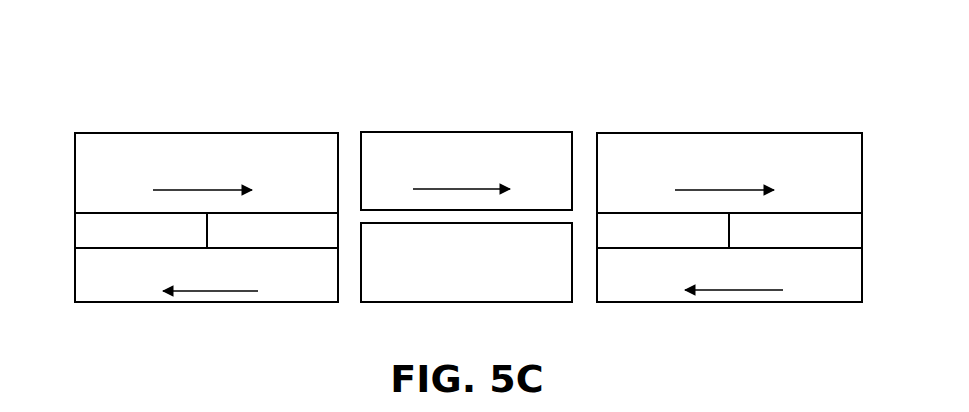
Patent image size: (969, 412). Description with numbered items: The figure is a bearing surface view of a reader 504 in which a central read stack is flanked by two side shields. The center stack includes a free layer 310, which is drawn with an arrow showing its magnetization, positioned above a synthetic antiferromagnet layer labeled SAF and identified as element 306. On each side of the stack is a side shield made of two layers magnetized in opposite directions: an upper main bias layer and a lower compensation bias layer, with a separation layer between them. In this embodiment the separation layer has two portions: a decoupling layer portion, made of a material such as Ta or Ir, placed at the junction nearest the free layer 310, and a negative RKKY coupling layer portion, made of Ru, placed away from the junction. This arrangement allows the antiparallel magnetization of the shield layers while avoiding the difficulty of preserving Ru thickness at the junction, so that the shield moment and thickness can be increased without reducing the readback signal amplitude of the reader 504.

The free layer 310 is at (396, 142).
The synthetic antiferromagnet 306 is at (532, 290).
The reader 504 is at (810, 74).